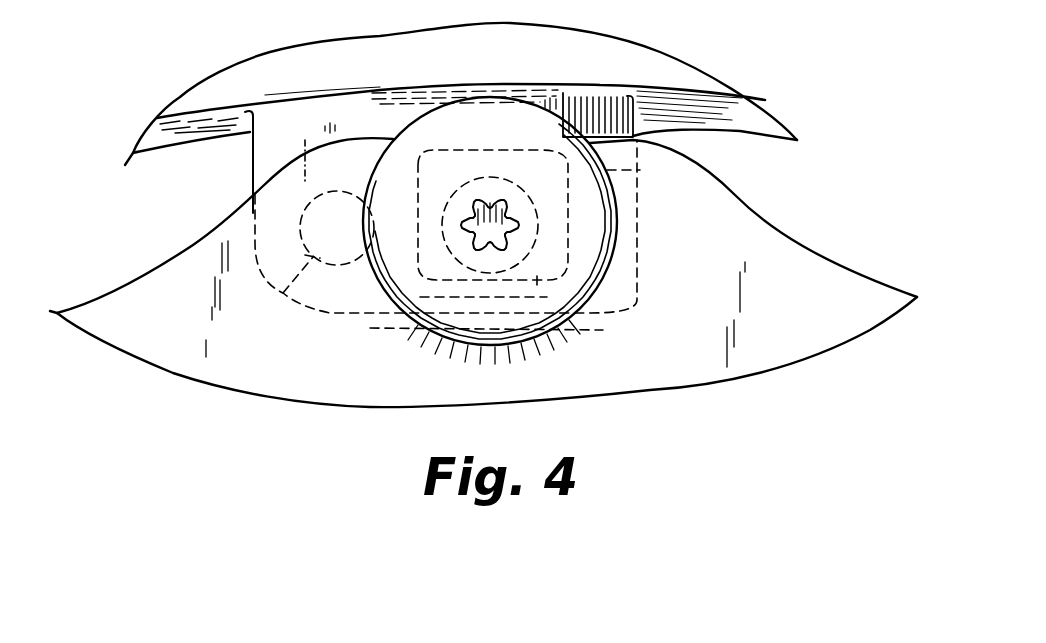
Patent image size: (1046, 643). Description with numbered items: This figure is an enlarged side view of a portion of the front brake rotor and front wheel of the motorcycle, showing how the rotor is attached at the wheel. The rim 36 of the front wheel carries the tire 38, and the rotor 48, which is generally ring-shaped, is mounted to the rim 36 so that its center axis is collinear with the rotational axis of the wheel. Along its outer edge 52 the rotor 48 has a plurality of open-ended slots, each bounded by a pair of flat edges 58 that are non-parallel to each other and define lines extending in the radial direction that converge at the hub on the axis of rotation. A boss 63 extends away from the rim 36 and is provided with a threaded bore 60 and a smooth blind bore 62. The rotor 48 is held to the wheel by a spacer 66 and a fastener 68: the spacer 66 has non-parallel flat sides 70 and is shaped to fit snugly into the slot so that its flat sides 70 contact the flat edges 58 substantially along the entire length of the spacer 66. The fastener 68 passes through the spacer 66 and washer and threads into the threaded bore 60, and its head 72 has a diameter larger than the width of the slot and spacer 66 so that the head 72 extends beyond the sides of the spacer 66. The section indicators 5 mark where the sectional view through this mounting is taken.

The tire 38 is at (600, 44).
The rim 36 is at (768, 112).
The boss 63 is at (277, 127).
The fastener 68 is at (450, 124).
The head 72 is at (522, 136).
The outer edge 52 is at (882, 258).
The rotor 48 is at (753, 350).
The section line 5 is at (174, 227).
The flat edges 58 is at (660, 208).
The smooth blind bore 62 is at (283, 243).
The flat sides 70 is at (375, 184).
The threaded bore 60 is at (649, 172).
The spacer 66 is at (516, 334).